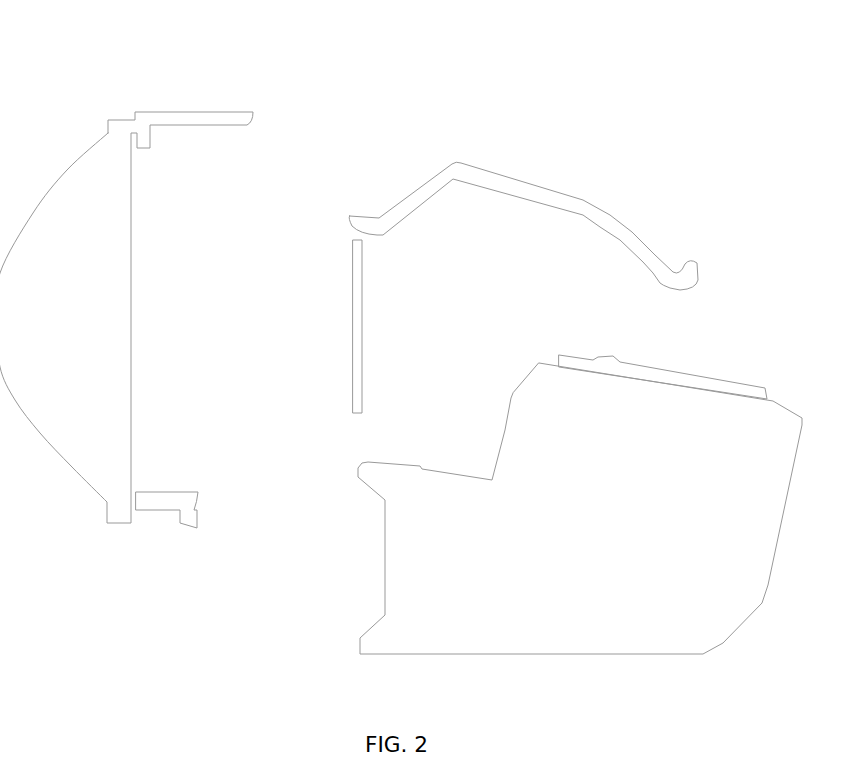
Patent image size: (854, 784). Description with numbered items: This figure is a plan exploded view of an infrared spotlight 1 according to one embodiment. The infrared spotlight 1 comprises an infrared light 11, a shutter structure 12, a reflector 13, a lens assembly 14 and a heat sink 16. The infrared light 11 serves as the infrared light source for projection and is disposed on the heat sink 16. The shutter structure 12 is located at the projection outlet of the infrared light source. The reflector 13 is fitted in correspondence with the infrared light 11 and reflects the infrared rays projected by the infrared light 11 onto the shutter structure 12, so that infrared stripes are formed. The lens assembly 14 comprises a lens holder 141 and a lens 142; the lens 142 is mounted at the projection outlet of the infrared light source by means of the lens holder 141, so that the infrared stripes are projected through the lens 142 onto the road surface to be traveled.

The infrared spotlight 1 is at (349, 45).
The infrared light 11 is at (658, 372).
The shutter structure 12 is at (353, 306).
The reflector 13 is at (585, 200).
The lens assembly 14 is at (213, 379).
The lens holder 141 is at (145, 500).
The lens 142 is at (131, 397).
The heat sink 16 is at (560, 635).